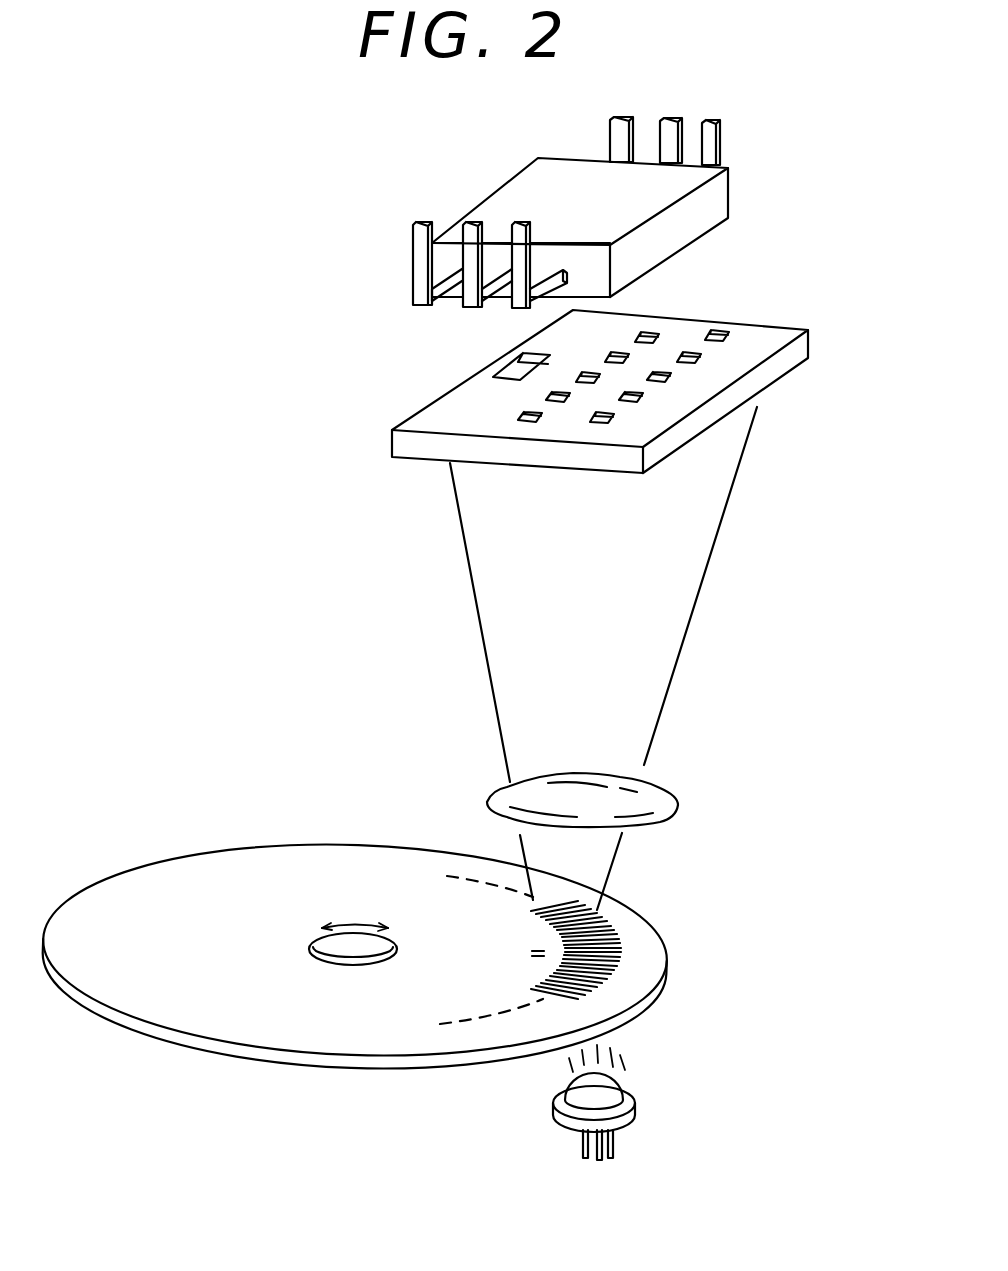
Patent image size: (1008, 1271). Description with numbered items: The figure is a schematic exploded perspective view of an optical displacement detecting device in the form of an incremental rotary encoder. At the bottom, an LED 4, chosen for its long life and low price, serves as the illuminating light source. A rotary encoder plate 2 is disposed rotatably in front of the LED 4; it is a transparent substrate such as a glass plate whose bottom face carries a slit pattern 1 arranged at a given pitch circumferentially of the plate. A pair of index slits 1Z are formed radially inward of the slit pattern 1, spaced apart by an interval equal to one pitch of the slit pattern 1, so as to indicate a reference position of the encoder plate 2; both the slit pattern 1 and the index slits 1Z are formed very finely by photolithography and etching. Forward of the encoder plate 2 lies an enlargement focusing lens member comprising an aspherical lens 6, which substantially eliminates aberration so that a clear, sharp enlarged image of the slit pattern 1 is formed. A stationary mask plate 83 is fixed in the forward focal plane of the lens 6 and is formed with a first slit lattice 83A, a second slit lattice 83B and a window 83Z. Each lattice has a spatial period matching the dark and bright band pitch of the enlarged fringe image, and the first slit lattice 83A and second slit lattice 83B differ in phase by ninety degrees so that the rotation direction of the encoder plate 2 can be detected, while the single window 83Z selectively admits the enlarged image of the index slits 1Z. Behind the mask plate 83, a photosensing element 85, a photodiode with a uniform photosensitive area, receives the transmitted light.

The photosensing element 85 is at (705, 215).
The stationary mask plate 83 is at (626, 359).
The first slit lattice 83A is at (760, 327).
The second slit lattice 83B is at (656, 338).
The window 83Z is at (493, 363).
The aspherical lens 6 is at (667, 793).
The rotary encoder plate 2 is at (650, 972).
The slit pattern 1 is at (627, 947).
The index slits 1Z is at (533, 960).
The LED 4 is at (630, 1100).